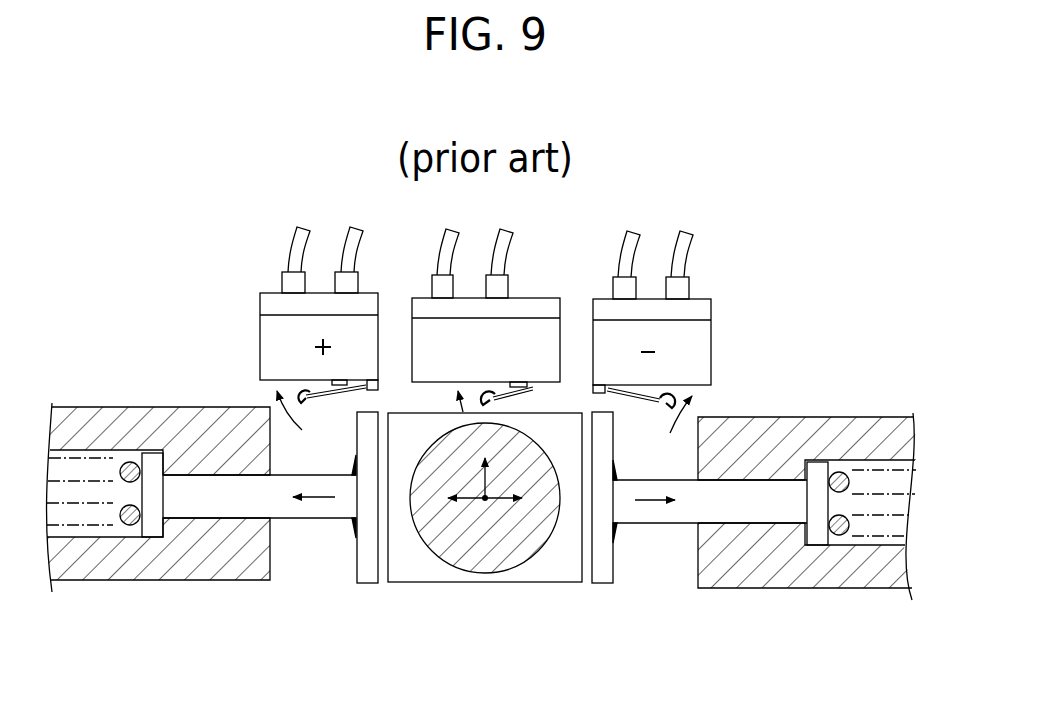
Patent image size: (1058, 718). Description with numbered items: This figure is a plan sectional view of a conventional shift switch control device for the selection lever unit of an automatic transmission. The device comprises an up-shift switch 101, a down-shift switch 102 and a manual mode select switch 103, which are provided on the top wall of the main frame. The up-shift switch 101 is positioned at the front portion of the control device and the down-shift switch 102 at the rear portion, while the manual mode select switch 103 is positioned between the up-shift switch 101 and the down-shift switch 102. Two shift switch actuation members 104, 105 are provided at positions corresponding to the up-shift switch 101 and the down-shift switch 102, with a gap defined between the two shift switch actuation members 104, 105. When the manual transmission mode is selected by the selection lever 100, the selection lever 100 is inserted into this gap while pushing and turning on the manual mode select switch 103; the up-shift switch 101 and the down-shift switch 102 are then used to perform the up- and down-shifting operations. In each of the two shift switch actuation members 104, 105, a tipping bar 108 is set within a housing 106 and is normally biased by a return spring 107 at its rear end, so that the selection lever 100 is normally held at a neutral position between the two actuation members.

The selection lever 100 is at (495, 570).
The up-shift switch 101 is at (268, 332).
The down-shift switch 102 is at (712, 327).
The manual mode select switch 103 is at (420, 298).
The shift switch actuation member 104 is at (173, 593).
The shift switch actuation member 105 is at (805, 594).
The housing 106 is at (130, 570).
The return spring 107 is at (128, 461).
The tipping bar 108 is at (263, 503).